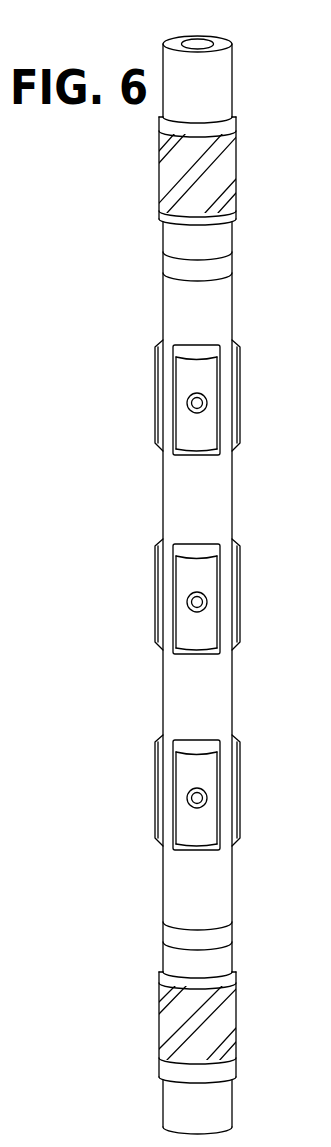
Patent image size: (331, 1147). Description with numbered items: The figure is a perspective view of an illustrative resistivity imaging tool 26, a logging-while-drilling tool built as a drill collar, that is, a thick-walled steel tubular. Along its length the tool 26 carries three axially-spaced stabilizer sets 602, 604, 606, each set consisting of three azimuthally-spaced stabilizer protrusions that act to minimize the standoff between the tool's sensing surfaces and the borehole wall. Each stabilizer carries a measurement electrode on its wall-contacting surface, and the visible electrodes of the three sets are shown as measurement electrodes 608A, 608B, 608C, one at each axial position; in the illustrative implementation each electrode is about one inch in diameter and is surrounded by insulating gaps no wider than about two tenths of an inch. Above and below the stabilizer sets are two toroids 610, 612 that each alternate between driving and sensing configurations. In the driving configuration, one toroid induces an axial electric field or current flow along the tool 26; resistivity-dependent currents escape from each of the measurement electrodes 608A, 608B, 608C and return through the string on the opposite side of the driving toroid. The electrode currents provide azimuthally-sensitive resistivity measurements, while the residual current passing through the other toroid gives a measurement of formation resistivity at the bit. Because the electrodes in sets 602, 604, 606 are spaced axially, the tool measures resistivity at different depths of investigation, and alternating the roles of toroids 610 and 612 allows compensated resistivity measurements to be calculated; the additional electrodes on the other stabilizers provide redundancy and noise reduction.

The resistivity imaging tool 26 is at (228, 302).
The stabilizer set 602 is at (196, 396).
The stabilizer set 604 is at (196, 595).
The stabilizer set 606 is at (196, 791).
The measurement electrode 608A is at (189, 398).
The measurement electrode 608B is at (189, 598).
The measurement electrode 608C is at (189, 794).
The toroid 610 is at (198, 277).
The toroid 612 is at (197, 935).